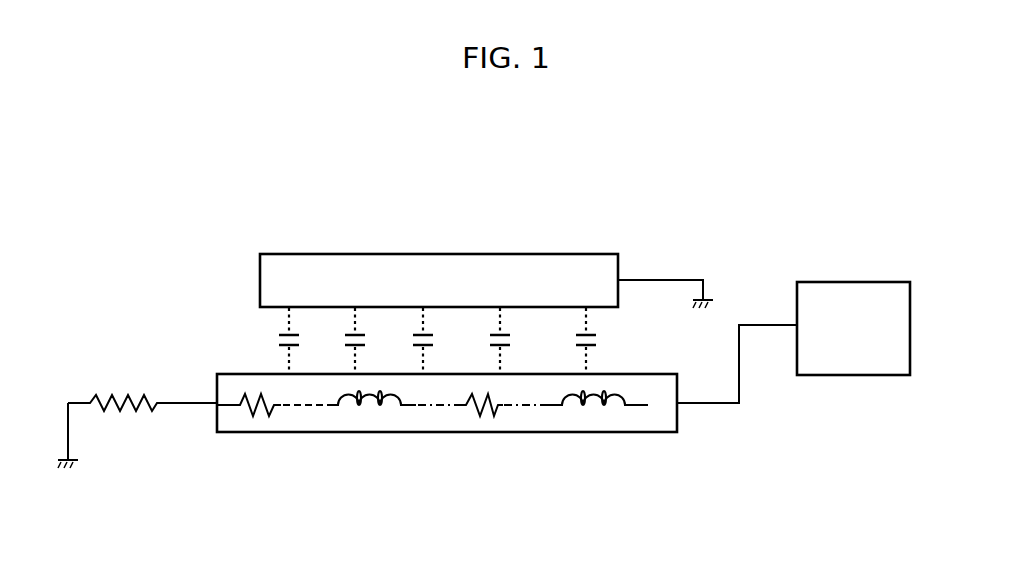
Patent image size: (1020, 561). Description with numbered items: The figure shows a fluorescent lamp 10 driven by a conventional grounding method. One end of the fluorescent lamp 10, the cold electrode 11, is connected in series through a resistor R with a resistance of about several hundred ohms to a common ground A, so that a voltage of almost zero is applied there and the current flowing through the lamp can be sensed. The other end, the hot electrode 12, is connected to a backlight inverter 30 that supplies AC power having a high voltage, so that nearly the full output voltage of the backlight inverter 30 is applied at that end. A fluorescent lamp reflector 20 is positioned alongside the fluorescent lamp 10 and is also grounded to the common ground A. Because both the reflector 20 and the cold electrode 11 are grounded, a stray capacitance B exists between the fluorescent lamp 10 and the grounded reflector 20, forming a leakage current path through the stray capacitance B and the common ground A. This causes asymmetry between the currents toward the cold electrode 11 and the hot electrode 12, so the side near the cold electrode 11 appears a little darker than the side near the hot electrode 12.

The fluorescent lamp 10 is at (482, 433).
The cold electrode 11 is at (165, 450).
The hot electrode 12 is at (737, 411).
The fluorescent lamp reflector 20 is at (514, 254).
The backlight inverter 30 is at (840, 375).
The resistor R is at (142, 389).
The common ground A is at (69, 467).
The stray capacitance B is at (602, 343).